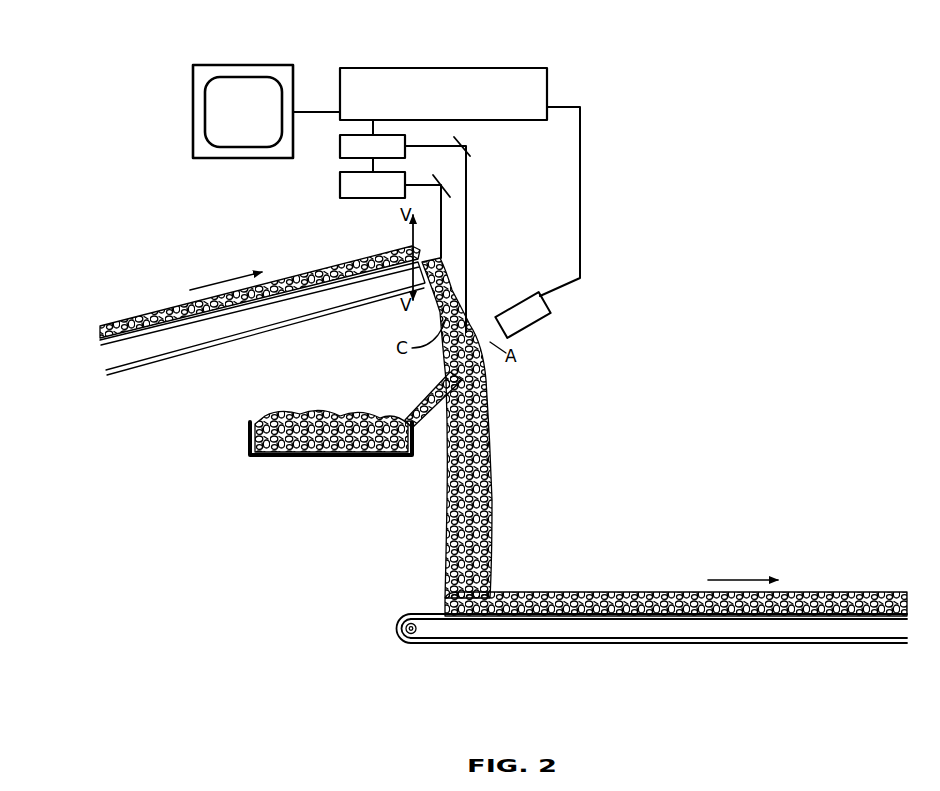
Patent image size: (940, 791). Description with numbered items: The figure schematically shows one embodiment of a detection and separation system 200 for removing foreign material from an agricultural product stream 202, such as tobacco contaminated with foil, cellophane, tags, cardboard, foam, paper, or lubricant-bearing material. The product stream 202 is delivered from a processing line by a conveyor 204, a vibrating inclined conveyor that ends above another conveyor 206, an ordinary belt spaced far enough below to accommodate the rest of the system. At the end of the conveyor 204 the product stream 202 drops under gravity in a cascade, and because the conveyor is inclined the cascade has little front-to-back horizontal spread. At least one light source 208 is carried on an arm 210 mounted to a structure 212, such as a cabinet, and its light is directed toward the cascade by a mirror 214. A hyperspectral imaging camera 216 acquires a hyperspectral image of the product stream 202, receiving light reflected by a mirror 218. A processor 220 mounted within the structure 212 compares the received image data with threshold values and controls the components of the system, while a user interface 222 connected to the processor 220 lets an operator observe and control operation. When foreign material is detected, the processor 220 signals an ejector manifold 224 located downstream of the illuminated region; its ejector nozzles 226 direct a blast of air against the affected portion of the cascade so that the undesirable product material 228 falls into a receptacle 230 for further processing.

The detection and separation system 200 is at (128, 117).
The agricultural product stream 202 is at (358, 262).
The conveyor 204 is at (218, 345).
The conveyor 206 is at (795, 645).
The light source 208 is at (340, 182).
The arm 210 is at (372, 165).
The structure 212 is at (550, 80).
The mirror 214 is at (444, 183).
The hyperspectral imaging camera 216 is at (340, 137).
The mirror 218 is at (466, 140).
The processor 220 is at (437, 67).
The user interface 222 is at (250, 64).
The ejector manifold 224 is at (550, 305).
The ejector nozzles 226 is at (492, 331).
The undesirable product material 228 is at (415, 393).
The receptacle 230 is at (250, 424).